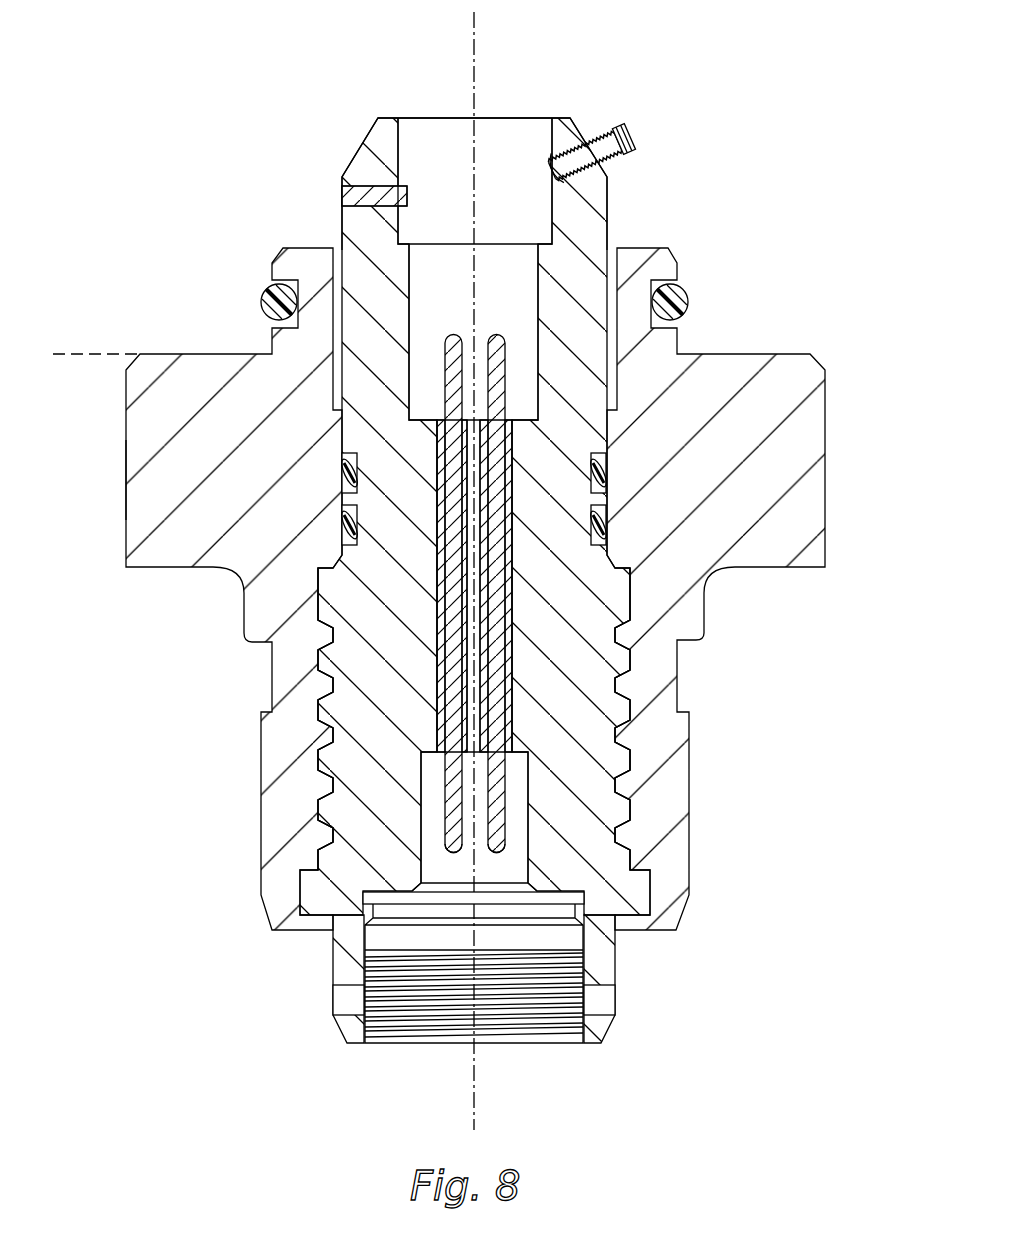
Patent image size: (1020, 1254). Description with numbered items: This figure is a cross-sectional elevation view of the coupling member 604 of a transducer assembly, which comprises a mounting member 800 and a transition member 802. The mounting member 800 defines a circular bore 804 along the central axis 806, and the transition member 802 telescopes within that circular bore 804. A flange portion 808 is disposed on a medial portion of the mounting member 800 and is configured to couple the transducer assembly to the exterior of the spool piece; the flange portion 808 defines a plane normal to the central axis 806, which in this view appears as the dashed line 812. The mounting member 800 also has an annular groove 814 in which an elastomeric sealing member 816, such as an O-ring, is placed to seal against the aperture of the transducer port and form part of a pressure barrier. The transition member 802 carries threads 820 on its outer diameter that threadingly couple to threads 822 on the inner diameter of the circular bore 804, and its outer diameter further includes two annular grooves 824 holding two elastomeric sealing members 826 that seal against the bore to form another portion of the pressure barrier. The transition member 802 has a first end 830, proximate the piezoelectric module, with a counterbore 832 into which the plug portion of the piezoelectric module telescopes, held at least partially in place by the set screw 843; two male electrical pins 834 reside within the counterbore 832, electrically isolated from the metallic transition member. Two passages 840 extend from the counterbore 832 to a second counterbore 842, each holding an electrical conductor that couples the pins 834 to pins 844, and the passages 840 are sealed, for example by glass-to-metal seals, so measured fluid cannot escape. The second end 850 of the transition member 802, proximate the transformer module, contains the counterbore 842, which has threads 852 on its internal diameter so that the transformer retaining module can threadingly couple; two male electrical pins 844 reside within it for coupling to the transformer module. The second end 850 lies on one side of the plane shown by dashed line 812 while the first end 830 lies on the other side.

The coupling member 604 is at (188, 160).
The mounting member 800 is at (125, 432).
The transition member 802 is at (345, 765).
The circular bore 804 is at (345, 297).
The central axis 806 is at (478, 28).
The flange portion 808 is at (150, 488).
The dashed line 812 is at (103, 354).
The annular groove 814 is at (687, 300).
The elastomeric sealing member 816 is at (262, 296).
The threads 820 is at (625, 830).
The threads 822 is at (625, 830).
The annular grooves 824 is at (607, 528).
The elastomeric sealing members 826 is at (342, 512).
The first end 830 is at (328, 133).
The counterbore 832 is at (398, 138).
The electrical pins 834 is at (497, 332).
The passages 840 is at (470, 600).
The second counterbore 842 is at (518, 806).
The set screw 843 is at (618, 142).
The electrical pins 844 is at (492, 806).
The second end 850 is at (298, 1050).
The threads 852 is at (585, 1022).